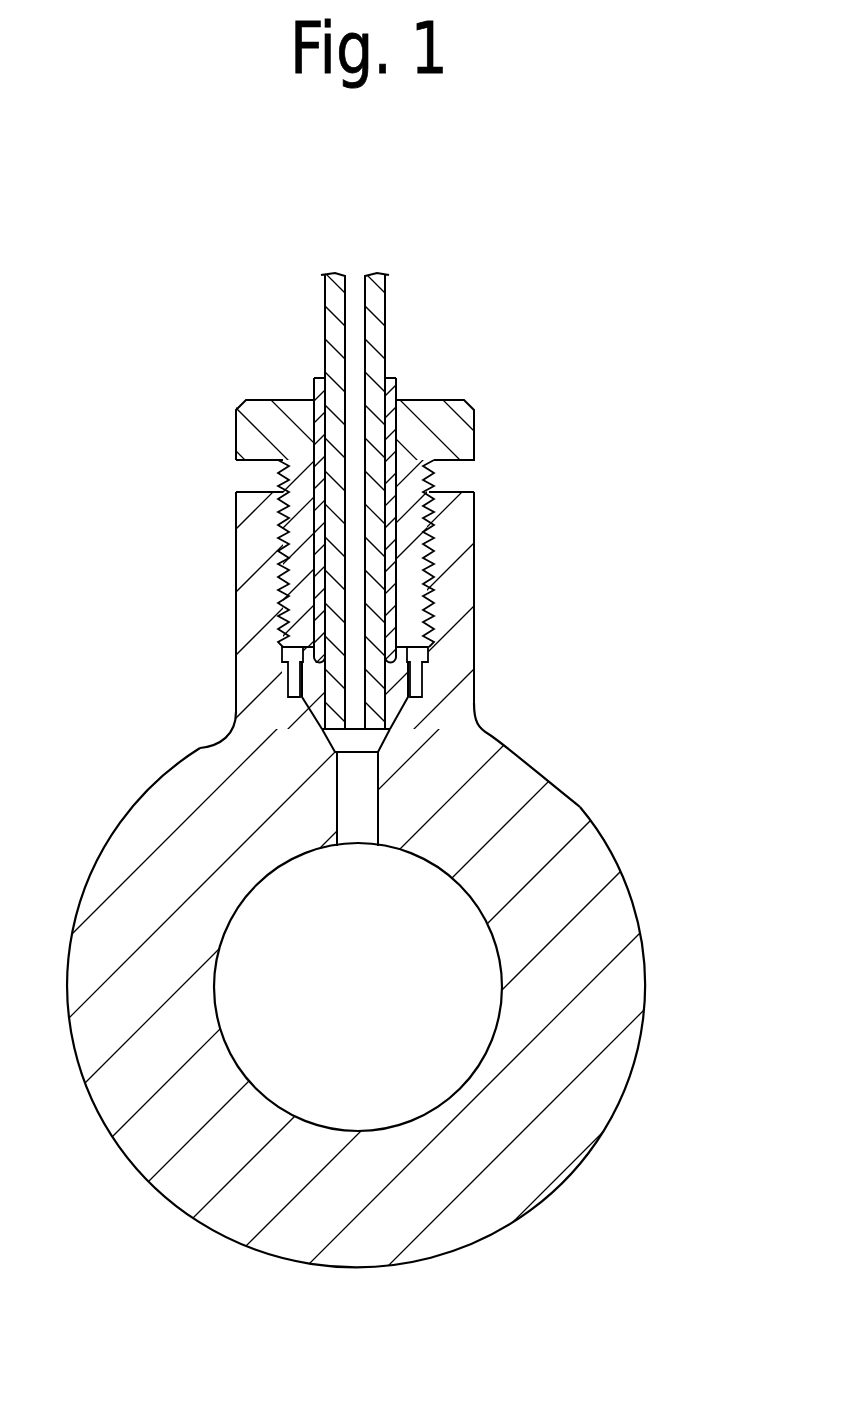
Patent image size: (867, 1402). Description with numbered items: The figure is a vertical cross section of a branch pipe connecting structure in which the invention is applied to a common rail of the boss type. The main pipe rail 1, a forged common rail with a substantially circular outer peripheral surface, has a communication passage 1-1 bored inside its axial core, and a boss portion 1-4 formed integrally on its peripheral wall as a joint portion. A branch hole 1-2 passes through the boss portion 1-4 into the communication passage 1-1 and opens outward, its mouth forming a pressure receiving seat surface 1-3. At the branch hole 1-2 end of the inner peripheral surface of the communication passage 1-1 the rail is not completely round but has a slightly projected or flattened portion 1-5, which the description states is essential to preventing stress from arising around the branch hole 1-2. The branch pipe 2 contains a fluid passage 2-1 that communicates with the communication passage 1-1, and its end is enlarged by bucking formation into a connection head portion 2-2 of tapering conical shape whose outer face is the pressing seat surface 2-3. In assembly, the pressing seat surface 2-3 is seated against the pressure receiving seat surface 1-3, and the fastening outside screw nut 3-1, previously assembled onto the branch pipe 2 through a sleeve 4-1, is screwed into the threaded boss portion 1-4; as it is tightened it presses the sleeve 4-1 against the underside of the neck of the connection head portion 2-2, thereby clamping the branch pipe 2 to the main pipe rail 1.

The main pipe rail 1 is at (616, 918).
The communication passage 1-1 is at (490, 1025).
The branch hole 1-2 is at (352, 824).
The pressure receiving seat surface 1-3 is at (377, 735).
The boss portion 1-4 is at (457, 543).
The projected or flattened portion 1-5 is at (440, 862).
The branch pipe 2 is at (377, 338).
The fluid passage 2-1 is at (341, 320).
The connection head portion 2-2 is at (424, 679).
The pressing seat surface 2-3 is at (310, 706).
The fastening outside screw nut 3-1 is at (474, 431).
The sleeve 4-1 is at (390, 398).